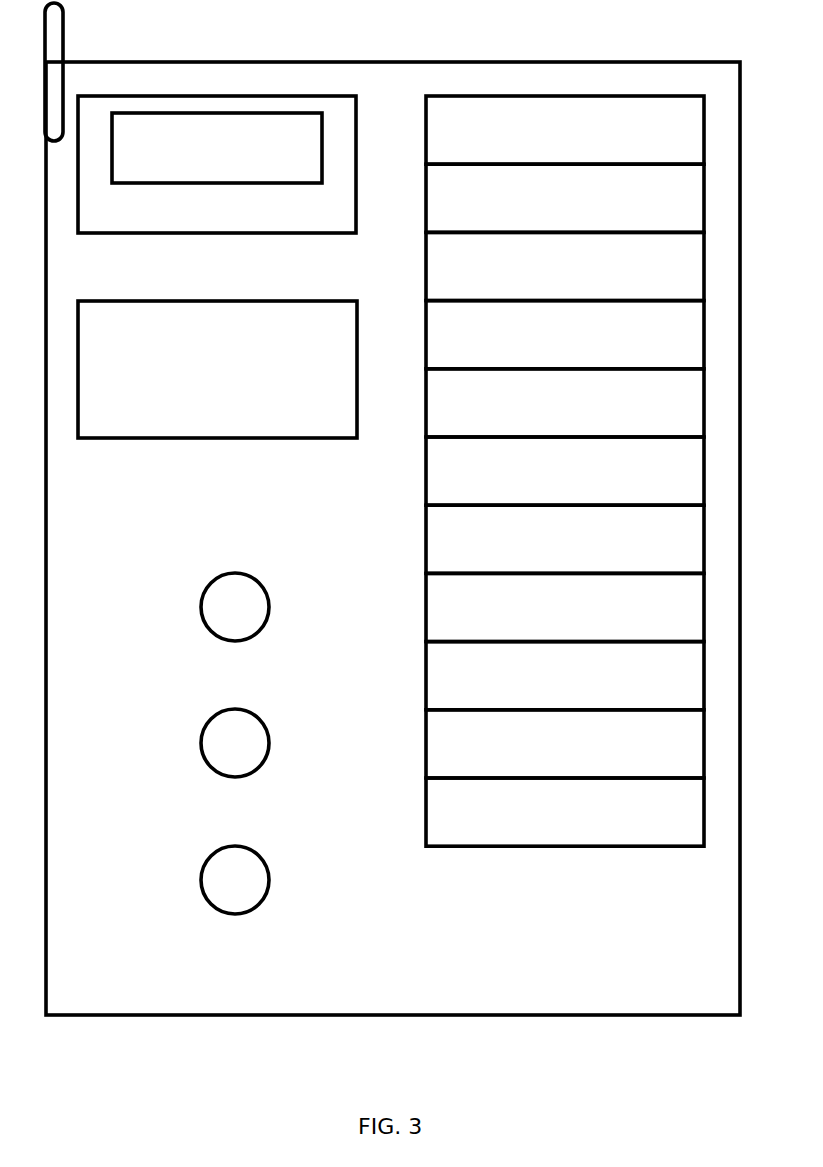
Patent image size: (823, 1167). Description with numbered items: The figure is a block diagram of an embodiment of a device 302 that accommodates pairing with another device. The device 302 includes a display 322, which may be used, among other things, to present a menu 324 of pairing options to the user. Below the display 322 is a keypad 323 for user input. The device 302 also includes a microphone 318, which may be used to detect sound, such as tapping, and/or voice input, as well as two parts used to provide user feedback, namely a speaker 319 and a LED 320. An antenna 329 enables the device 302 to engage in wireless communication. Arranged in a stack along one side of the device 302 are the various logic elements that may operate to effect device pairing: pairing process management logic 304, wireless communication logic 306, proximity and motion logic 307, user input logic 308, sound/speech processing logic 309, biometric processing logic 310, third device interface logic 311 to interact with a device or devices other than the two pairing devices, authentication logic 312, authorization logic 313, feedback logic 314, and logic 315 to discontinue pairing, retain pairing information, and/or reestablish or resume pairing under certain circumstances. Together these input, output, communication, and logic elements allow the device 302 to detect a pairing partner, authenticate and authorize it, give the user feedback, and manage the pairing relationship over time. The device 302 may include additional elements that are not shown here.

The device 302 is at (412, 1017).
The pairing process management logic 304 is at (546, 141).
The wireless communication logic 306 is at (546, 209).
The proximity and motion logic 307 is at (546, 277).
The user input logic 308 is at (546, 346).
The sound/speech processing logic 309 is at (546, 414).
The biometric processing logic 310 is at (546, 482).
The third device interface logic 311 is at (546, 550).
The authentication logic 312 is at (546, 618).
The authorization logic 313 is at (546, 687).
The feedback logic 314 is at (546, 755).
The logic to discontinue, retain, and reestablish pairing 315 is at (546, 823).
The microphone 318 is at (201, 608).
The speaker 319 is at (201, 744).
The LED 320 is at (201, 881).
The display 322 is at (348, 219).
The keypad 323 is at (237, 381).
The menu 324 is at (237, 159).
The antenna 329 is at (63, 21).